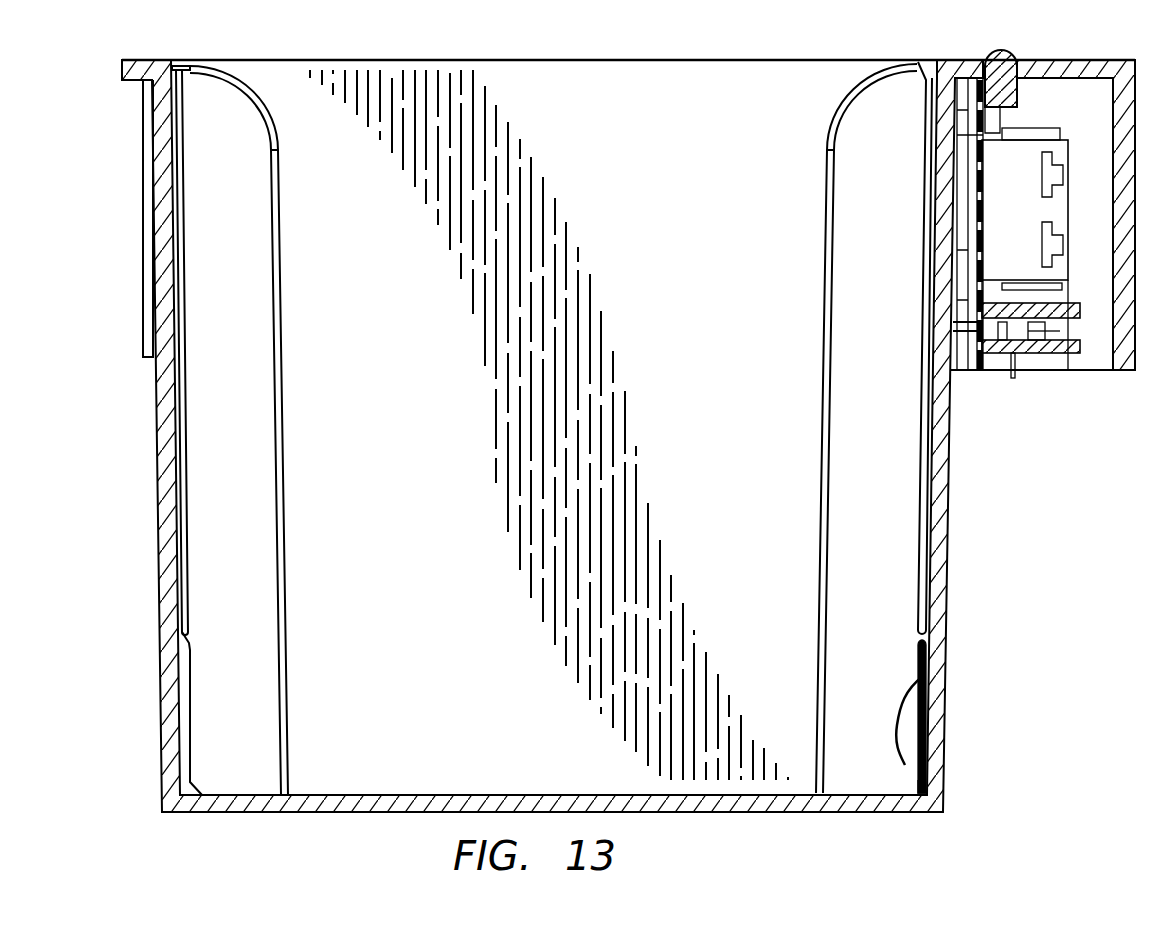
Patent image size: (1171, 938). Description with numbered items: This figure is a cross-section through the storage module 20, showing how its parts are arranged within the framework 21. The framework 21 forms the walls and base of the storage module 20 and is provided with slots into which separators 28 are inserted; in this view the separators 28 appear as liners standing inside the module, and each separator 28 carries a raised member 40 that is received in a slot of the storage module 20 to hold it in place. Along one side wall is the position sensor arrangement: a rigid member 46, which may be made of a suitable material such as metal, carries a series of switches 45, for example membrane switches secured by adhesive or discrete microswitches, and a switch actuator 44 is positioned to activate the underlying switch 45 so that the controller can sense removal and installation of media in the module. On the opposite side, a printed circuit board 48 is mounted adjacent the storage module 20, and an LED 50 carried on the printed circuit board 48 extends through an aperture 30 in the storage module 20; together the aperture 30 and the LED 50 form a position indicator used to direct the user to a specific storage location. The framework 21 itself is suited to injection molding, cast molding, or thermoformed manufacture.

The storage module 20 is at (152, 62).
The framework 21 is at (168, 665).
The separator 28 is at (240, 293).
The aperture 30 is at (1017, 62).
The raised member 40 is at (144, 237).
The switch actuator 44 is at (898, 707).
The switch 45 is at (912, 770).
The rigid member 46 is at (932, 700).
The printed circuit board 48 is at (978, 372).
The LED 50 is at (997, 50).